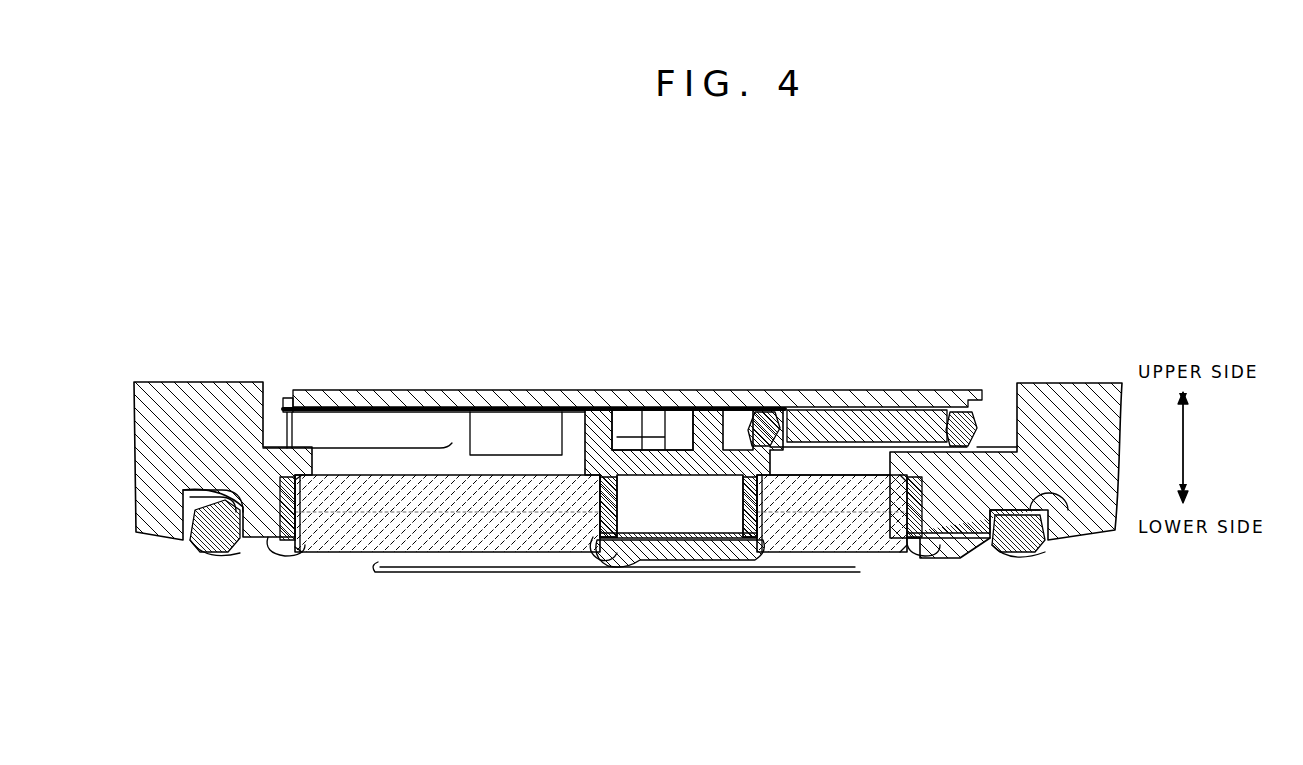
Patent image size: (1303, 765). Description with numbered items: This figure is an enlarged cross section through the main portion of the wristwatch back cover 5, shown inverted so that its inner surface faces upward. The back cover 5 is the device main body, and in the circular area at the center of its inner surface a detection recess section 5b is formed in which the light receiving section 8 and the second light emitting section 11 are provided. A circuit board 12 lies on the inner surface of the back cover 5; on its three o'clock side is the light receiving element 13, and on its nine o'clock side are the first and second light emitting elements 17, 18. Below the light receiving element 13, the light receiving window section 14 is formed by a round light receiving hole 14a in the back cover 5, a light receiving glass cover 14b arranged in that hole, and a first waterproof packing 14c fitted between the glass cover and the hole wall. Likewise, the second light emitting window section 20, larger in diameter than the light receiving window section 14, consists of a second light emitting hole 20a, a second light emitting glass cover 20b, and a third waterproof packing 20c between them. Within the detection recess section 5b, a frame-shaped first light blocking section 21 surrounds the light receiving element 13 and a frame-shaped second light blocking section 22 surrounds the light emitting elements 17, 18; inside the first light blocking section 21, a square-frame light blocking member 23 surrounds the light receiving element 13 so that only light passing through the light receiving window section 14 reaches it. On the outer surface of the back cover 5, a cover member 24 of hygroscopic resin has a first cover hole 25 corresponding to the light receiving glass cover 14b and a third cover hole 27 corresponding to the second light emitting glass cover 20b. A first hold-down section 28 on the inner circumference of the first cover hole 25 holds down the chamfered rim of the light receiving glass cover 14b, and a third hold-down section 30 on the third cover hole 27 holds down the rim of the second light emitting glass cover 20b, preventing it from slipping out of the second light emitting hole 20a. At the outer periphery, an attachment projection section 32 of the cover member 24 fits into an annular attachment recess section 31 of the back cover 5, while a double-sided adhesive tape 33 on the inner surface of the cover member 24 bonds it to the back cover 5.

The back cover 5 is at (1040, 383).
The detection recess section 5b is at (275, 436).
The light receiving section 8 is at (828, 460).
The second light emitting section 11 is at (455, 443).
The circuit board 12 is at (365, 398).
The light receiving element 13 is at (870, 428).
The light receiving window section 14 is at (864, 571).
The light receiving hole 14a is at (940, 546).
The light receiving glass cover 14b is at (818, 540).
The first waterproof packing 14c is at (882, 542).
The first light emitting element 17 is at (510, 420).
The second light emitting element 18 is at (439, 372).
The second light emitting window section 20 is at (414, 574).
The second light emitting hole 20a is at (270, 520).
The second light emitting glass cover 20b is at (445, 540).
The third waterproof packing 20c is at (308, 505).
The first light blocking section 21 is at (702, 415).
The second light blocking section 22 is at (602, 440).
The light blocking member 23 is at (767, 438).
The cover member 24 is at (692, 568).
The first cover hole 25 is at (765, 560).
The third cover hole 27 is at (600, 548).
The first hold-down section 28 is at (750, 548).
The third hold-down section 30 is at (290, 548).
The attachment recess section 31 is at (195, 481).
The attachment projection section 32 is at (207, 535).
The double-sided adhesive tape 33 is at (243, 545).